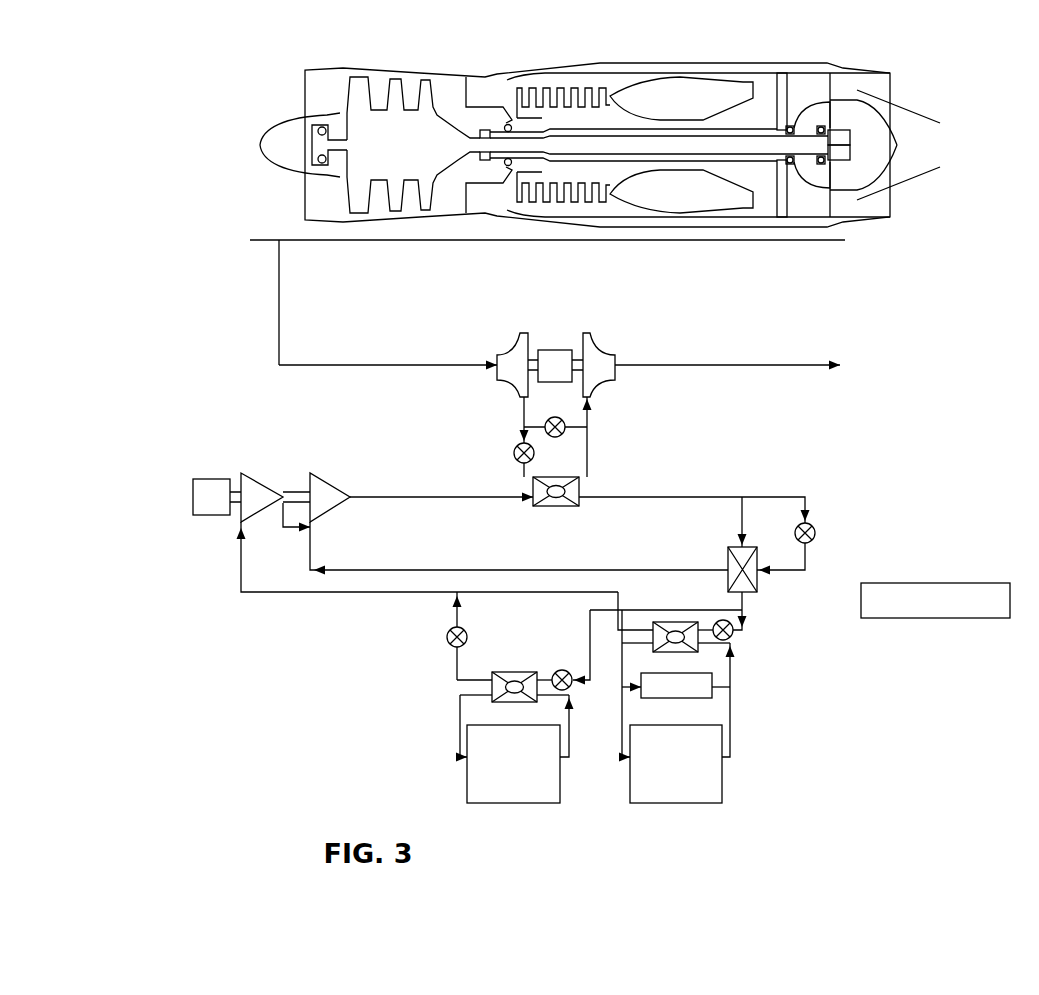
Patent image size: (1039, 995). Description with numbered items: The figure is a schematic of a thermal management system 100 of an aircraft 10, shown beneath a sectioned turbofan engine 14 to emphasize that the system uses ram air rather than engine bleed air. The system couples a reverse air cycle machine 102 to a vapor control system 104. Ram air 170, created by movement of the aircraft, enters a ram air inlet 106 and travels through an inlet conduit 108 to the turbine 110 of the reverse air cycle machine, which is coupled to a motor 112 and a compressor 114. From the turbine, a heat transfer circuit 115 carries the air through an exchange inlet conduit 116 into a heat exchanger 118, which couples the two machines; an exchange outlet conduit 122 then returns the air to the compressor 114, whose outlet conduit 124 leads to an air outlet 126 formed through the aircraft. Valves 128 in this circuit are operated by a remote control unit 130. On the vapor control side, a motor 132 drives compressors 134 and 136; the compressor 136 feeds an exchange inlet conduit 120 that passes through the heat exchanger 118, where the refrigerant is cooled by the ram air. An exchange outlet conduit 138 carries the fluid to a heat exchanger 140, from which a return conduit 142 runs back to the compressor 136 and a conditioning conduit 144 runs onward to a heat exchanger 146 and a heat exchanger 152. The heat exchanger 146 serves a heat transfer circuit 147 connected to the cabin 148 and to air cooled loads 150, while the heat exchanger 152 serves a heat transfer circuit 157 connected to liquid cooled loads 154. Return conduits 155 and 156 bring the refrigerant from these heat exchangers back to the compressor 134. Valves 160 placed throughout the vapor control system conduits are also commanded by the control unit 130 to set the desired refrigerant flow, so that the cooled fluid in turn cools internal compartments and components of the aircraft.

The aircraft 10 is at (250, 86).
The turbofan engine 14 is at (578, 58).
The thermal management system 100 is at (212, 352).
The reverse air cycle machine 102 is at (642, 347).
The vapor control system 104 is at (266, 634).
The ram air inlet 106 is at (279, 250).
The inlet conduit 108 is at (373, 365).
The turbine 110 is at (497, 355).
The motor 112 is at (555, 350).
The compressor 114 is at (607, 355).
The heat transfer circuit 115 is at (598, 455).
The exchange inlet conduit 116 is at (530, 483).
The heat exchanger 118 is at (558, 507).
The exchange inlet conduit 120 is at (458, 500).
The exchange outlet conduit 122 is at (589, 436).
The outlet conduit 124 is at (748, 364).
The air outlet 126 is at (842, 364).
The valve 128 is at (546, 422).
The control unit 130 is at (935, 583).
The motor 132 is at (212, 478).
The compressor 134 is at (262, 484).
The compressor 136 is at (331, 479).
The exchange outlet conduit 138 is at (657, 500).
The heat exchanger 140 is at (758, 580).
The return conduit 142 is at (544, 569).
The conditioning conduit 144 is at (744, 600).
The heat exchanger 146 is at (675, 622).
The heat transfer circuit 147 is at (731, 744).
The cabin 148 is at (712, 693).
The air cooled loads 150 is at (673, 803).
The heat exchanger 152 is at (513, 671).
The liquid cooled loads 154 is at (513, 803).
The return conduit 155 is at (615, 594).
The return conduit 156 is at (320, 592).
The heat transfer circuit 157 is at (457, 722).
The valve 160 is at (817, 531).
The ram air 170 is at (243, 216).